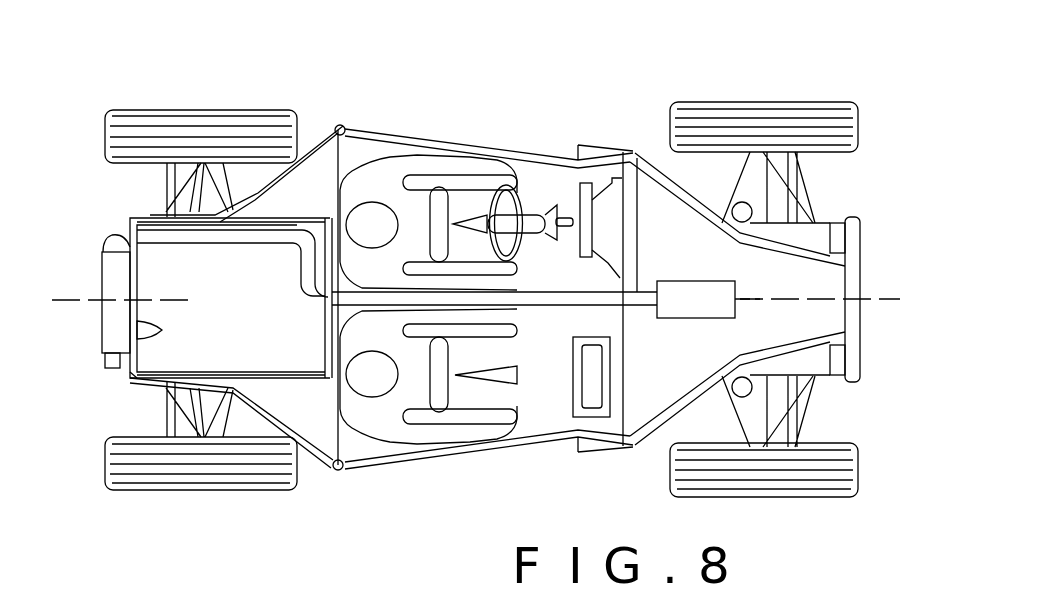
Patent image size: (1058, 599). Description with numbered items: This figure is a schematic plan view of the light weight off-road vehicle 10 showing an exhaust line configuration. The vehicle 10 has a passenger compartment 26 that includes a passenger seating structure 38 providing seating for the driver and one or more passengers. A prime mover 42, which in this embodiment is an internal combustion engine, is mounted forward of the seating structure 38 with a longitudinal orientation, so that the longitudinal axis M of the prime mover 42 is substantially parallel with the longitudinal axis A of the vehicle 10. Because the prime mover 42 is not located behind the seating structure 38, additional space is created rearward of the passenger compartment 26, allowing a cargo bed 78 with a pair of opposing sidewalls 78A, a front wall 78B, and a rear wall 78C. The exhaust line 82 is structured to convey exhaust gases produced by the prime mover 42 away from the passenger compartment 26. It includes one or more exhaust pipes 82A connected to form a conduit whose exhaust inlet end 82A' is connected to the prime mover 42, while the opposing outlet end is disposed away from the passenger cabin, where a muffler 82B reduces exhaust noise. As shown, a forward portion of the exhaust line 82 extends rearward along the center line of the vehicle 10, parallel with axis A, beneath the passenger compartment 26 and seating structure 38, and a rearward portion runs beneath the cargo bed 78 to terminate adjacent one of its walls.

The light weight off-road vehicle 10 is at (643, 56).
The passenger compartment 26 is at (393, 116).
The passenger seating structure 38 is at (362, 172).
The prime mover 42 is at (714, 292).
The cargo bed 78 is at (128, 380).
The sidewalls 78A is at (172, 226).
The front wall 78B is at (318, 357).
The rear wall 78C is at (135, 338).
The exhaust line 82 is at (216, 298).
The exhaust pipes 82A is at (397, 199).
The exhaust inlet end 82A' is at (629, 269).
The muffler 82B is at (113, 272).
The longitudinal axis of the prime mover M is at (747, 300).
The longitudinal axis of the vehicle A is at (480, 296).